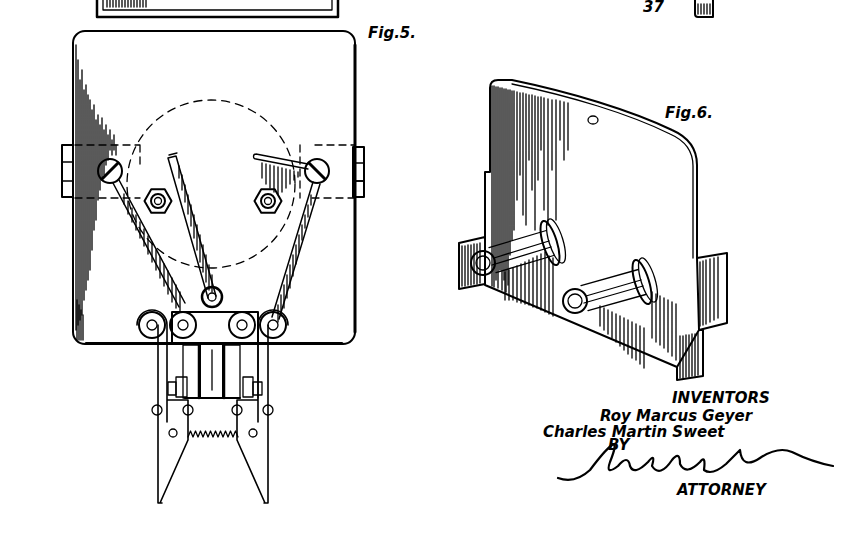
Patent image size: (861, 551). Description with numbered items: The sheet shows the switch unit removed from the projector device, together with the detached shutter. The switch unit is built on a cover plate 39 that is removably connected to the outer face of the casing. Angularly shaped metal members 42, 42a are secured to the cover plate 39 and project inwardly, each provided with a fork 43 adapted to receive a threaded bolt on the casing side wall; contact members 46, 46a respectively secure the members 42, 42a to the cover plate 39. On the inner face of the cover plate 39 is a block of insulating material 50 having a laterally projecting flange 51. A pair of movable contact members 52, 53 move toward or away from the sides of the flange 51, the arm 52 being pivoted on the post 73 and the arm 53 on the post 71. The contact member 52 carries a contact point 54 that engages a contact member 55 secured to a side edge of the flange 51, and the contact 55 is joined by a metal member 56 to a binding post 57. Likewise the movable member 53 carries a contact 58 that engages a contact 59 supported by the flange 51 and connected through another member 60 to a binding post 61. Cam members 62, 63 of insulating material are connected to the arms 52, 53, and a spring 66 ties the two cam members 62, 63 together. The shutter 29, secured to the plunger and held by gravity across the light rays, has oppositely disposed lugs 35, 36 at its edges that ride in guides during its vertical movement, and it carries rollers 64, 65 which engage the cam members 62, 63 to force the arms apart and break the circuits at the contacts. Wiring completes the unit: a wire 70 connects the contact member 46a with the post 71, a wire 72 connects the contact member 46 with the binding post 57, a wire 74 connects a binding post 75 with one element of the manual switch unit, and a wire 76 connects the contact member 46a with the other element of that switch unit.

In FIG. 6, the shutter 29 is at (698, 195).
In FIG. 6, the lug 35 is at (718, 281).
In FIG. 6, the lug 36 is at (470, 241).
In FIG. 5, the cover plate 39 is at (353, 99).
In FIG. 5, the angularly shaped metal member 42 is at (66, 146).
In FIG. 5, the angularly shaped metal member 42a is at (362, 152).
In FIG. 5, the fork 43 is at (364, 179).
In FIG. 5, the contact member 46 is at (116, 162).
In FIG. 5, the contact member 46a is at (316, 158).
In FIG. 5, the block of insulating material 50 is at (258, 320).
In FIG. 5, the laterally projecting flange 51 is at (213, 398).
In FIG. 5, the movable contact member 52 is at (147, 332).
In FIG. 5, the movable contact member 53 is at (263, 360).
In FIG. 5, the contact point 54 is at (176, 380).
In FIG. 5, the contact member 55 is at (177, 393).
In FIG. 5, the metal member 56 is at (190, 350).
In FIG. 5, the binding post 57 is at (185, 313).
In FIG. 5, the contact 58 is at (253, 380).
In FIG. 5, the contact 59 is at (268, 398).
In FIG. 5, the member 60 is at (230, 350).
In FIG. 5, the binding post 61 is at (243, 317).
In FIG. 5, the cam member 62 is at (162, 457).
In FIG. 5, the cam member 63 is at (262, 463).
In FIG. 6, the roller 64 is at (505, 282).
In FIG. 6, the roller 65 is at (580, 318).
In FIG. 5, the spring 66 is at (215, 438).
In FIG. 5, the wire 70 is at (296, 262).
In FIG. 5, the post 71 is at (282, 330).
In FIG. 5, the wire 72 is at (139, 223).
In FIG. 5, the post 73 is at (167, 317).
In FIG. 5, the wire 74 is at (191, 192).
In FIG. 5, the binding post 75 is at (203, 292).
In FIG. 5, the wire 76 is at (272, 158).